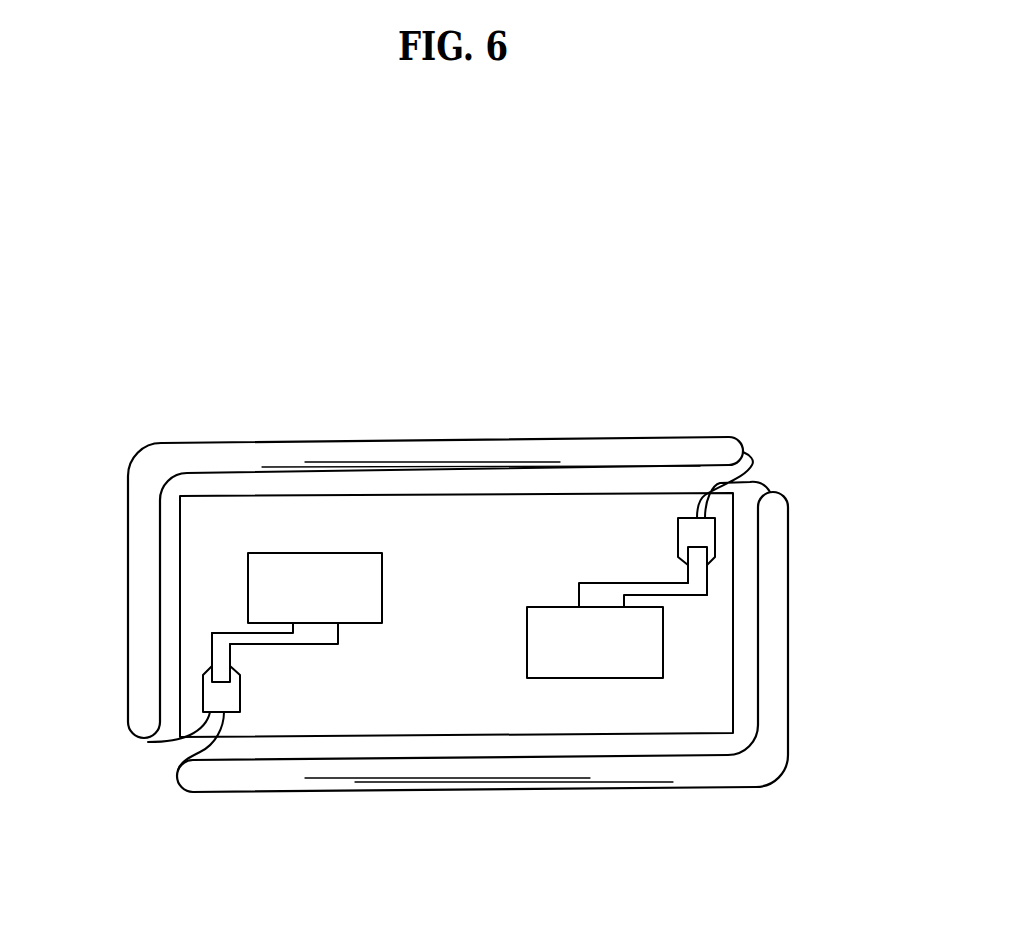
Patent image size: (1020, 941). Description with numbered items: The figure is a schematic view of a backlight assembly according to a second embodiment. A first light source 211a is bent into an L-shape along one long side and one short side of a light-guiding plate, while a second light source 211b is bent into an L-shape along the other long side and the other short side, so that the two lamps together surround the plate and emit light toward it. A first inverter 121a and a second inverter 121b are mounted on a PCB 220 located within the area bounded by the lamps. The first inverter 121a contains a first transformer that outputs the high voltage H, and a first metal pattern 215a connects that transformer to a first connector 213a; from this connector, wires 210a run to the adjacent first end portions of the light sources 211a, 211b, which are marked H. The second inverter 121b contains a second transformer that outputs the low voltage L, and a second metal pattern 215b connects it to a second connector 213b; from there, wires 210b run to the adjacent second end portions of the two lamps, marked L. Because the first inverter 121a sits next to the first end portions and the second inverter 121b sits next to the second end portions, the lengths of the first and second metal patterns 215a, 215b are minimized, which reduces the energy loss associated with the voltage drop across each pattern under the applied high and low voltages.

The second light source 211b is at (232, 458).
The first light source 211a is at (778, 662).
The PCB 220 is at (518, 725).
The second inverter 121b is at (382, 582).
The first inverter 121a is at (542, 610).
The second metal pattern 215b is at (340, 631).
The first metal pattern 215a is at (612, 583).
The second connector 213b is at (230, 698).
The first connector 213a is at (680, 530).
The wires for applying a low voltage 210b is at (148, 743).
The wires for applying a high voltage 210a is at (755, 456).